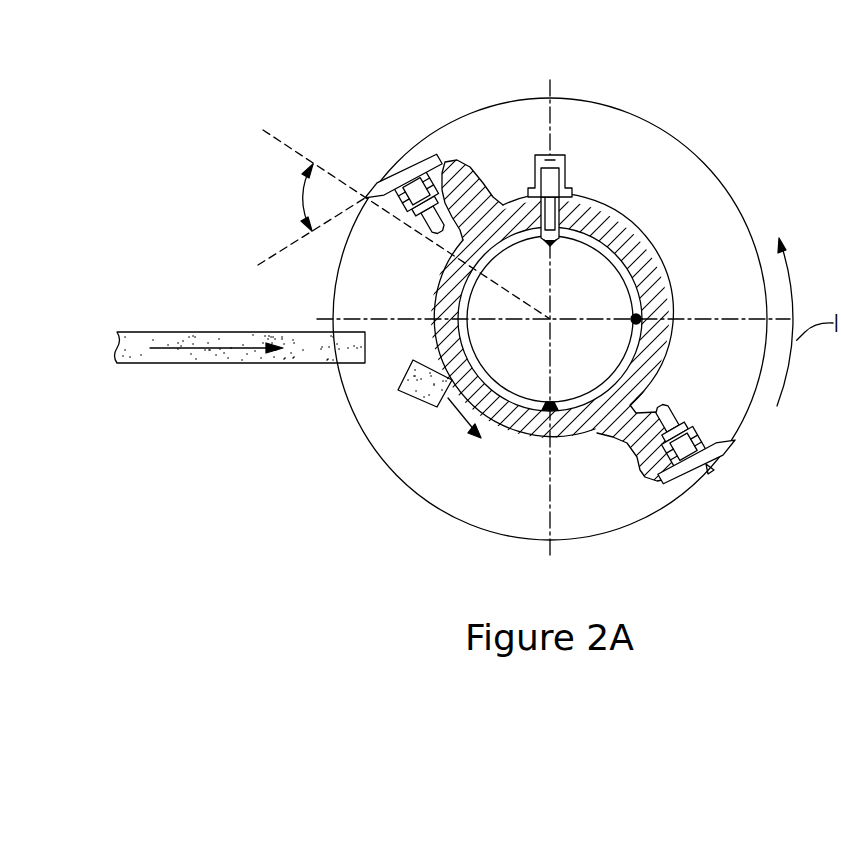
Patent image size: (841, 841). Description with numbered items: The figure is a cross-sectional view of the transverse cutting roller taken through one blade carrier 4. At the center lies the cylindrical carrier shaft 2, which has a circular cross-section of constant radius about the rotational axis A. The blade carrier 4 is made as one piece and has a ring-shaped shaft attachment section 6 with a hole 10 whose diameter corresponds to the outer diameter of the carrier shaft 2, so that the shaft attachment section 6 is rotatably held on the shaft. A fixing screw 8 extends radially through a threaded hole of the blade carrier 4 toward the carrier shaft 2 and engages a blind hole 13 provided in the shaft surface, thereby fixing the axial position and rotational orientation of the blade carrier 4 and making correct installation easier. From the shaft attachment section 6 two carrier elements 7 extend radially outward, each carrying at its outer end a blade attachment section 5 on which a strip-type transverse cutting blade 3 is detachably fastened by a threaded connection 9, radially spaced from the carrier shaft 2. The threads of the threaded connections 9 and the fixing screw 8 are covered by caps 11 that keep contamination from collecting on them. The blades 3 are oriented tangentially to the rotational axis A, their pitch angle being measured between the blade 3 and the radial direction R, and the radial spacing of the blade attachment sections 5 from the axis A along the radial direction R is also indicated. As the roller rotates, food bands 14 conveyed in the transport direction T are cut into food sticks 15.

The carrier shaft 2 is at (633, 336).
The transverse cutting blade 3 is at (383, 178).
The blade carrier 4 is at (670, 300).
The blade attachment section 5 is at (438, 162).
The shaft attachment section 6 is at (637, 258).
The carrier element 7 is at (472, 198).
The fixing screw 8 is at (572, 191).
The threaded connection 9 is at (710, 468).
The hole 10 is at (474, 302).
The covering cap 11 is at (564, 163).
The blind hole 13 is at (555, 247).
The food band 14 is at (282, 358).
The food sticks 15 is at (423, 393).
The rotational axis A is at (546, 328).
The radial direction R is at (285, 143).
The transport direction T is at (236, 352).